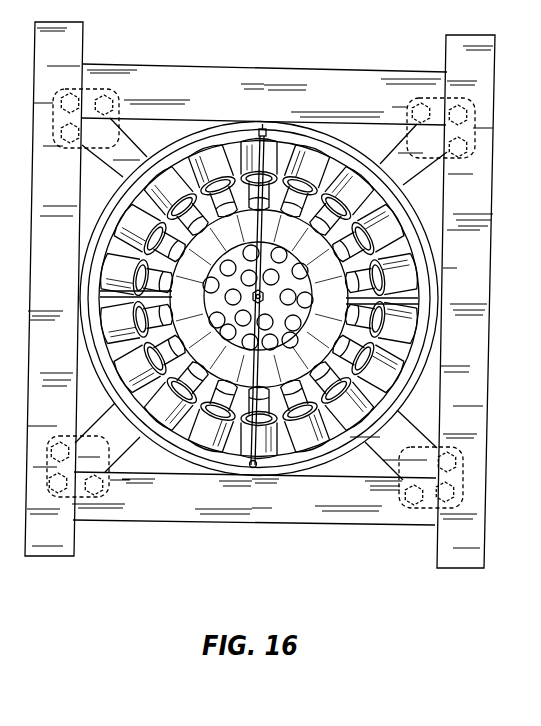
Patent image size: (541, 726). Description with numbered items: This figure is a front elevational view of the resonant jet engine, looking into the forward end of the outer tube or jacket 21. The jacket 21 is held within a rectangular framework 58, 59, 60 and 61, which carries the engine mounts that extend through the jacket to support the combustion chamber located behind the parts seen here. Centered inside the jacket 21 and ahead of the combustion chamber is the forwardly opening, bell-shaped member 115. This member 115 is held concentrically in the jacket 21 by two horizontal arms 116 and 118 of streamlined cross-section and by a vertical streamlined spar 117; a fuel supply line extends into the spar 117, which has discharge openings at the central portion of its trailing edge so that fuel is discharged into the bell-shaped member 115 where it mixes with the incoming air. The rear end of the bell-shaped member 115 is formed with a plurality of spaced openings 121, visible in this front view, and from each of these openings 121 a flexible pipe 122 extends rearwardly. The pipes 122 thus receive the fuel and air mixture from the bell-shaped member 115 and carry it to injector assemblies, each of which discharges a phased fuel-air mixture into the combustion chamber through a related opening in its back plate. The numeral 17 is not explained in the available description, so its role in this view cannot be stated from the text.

The disc 17 is at (107, 198).
The outer tube or jacket 21 is at (398, 207).
The framework 58 is at (478, 417).
The framework 59 is at (32, 222).
The framework 60 is at (357, 78).
The framework 61 is at (243, 521).
The bell-shaped member 115 is at (297, 217).
The horizontal arm 116 is at (112, 292).
The vertical streamlined spar 117 is at (258, 367).
The horizontal arm 118 is at (403, 298).
The spaced openings 121 is at (217, 325).
The flexible pipes 122 is at (312, 299).